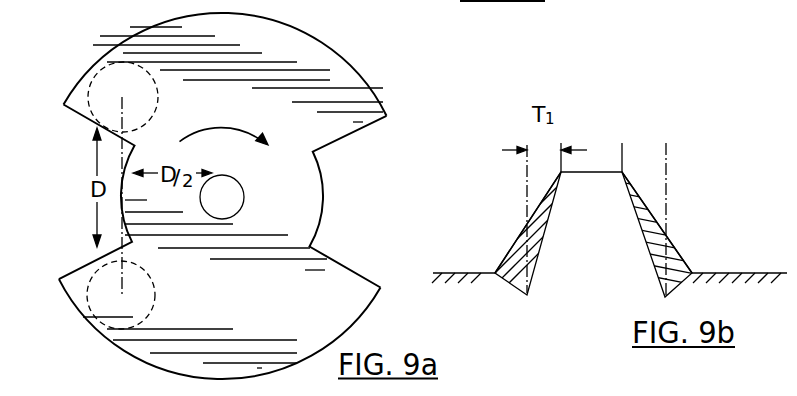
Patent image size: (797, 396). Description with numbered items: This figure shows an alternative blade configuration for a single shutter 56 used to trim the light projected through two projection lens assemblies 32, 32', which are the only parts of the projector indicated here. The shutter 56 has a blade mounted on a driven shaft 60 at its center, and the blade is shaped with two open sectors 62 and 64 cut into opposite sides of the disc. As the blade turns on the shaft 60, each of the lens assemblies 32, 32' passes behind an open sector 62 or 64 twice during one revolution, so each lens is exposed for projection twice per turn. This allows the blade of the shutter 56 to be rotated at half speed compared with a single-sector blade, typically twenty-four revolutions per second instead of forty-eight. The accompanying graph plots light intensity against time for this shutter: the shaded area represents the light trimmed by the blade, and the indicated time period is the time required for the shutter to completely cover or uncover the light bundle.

The projection lens assembly 32 is at (96, 101).
The projection lens assembly 32' is at (91, 303).
The shutter 56 is at (400, 100).
The driven shaft 60 is at (247, 196).
The open sector 62 is at (70, 240).
The open sector 64 is at (365, 186).